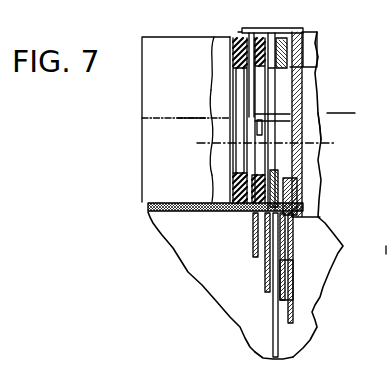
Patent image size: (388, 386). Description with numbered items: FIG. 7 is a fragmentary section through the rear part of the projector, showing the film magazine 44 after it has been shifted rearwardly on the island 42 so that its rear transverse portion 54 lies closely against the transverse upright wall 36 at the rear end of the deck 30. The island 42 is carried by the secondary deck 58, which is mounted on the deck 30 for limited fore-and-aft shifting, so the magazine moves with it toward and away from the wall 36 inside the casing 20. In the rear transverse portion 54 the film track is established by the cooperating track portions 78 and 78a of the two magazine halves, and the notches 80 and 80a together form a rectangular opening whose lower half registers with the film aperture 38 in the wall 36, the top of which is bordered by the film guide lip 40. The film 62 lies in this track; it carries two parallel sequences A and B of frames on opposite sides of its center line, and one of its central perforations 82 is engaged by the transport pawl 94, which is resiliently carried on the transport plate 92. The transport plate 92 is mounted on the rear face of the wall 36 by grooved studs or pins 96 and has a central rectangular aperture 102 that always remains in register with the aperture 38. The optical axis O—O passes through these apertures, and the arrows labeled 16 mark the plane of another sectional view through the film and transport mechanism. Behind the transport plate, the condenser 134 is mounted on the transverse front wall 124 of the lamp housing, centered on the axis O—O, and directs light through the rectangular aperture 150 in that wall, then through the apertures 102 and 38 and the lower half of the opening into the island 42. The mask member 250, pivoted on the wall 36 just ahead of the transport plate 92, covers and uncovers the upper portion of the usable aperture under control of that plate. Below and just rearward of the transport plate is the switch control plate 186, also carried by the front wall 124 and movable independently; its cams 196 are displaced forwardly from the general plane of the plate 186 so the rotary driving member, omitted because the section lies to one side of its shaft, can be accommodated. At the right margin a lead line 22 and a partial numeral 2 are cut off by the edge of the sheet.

The film magazine 44 is at (153, 12).
The notch of upper magazine half 80a is at (217, 41).
The notch of bottom magazine half 80 is at (226, 168).
The island 42 is at (222, 192).
The rear transverse portion of magazine 54 is at (233, 40).
The film track portion of upper magazine half 78a is at (252, 29).
The transverse upright wall 36 is at (272, 36).
The film aperture 38 is at (270, 160).
The film guide lip 40 is at (255, 97).
The condenser 134 is at (305, 67).
The grooved studs or pins 96 is at (297, 32).
The film 62 is at (238, 78).
The film format A is at (238, 82).
The section line 16 is at (190, 126).
The transport pawl 94 is at (252, 118).
The mask member 250 is at (330, 130).
The perforations 82 is at (240, 131).
The optical axis O is at (267, 142).
The film format B is at (242, 154).
The rectangular aperture of transport plate 102 is at (277, 171).
The rectangular aperture of front wall 150 is at (292, 188).
The film track portion of bottom magazine half 78 is at (231, 212).
The secondary deck 58 is at (148, 206).
The deck 30 is at (150, 224).
The transport plate 92 is at (250, 352).
The casing 20 is at (314, 328).
The switch control plate 186 is at (283, 350).
The cams 196 is at (288, 268).
The transverse front wall 124 is at (294, 302).
The base 22 is at (387, 250).
The partial numeral 2 is at (385, 298).